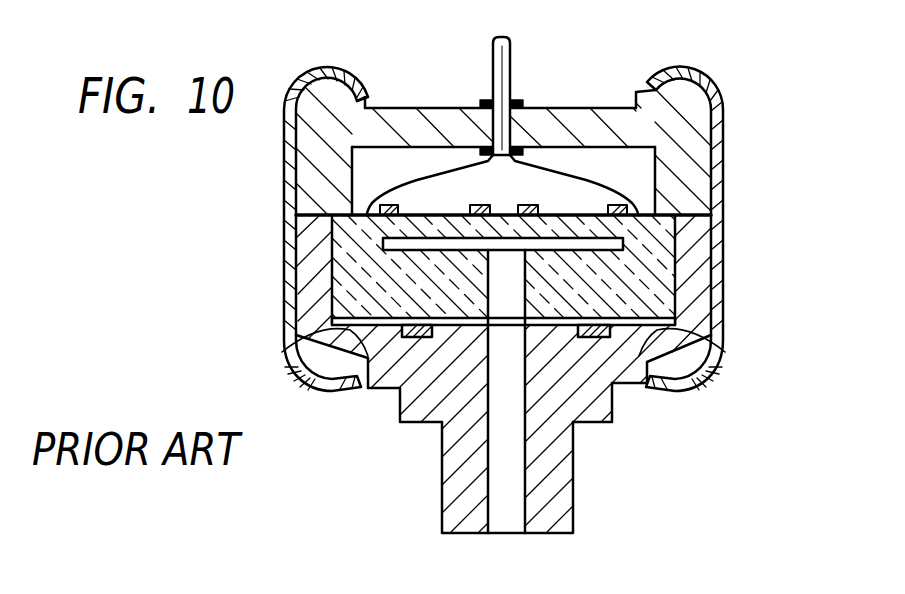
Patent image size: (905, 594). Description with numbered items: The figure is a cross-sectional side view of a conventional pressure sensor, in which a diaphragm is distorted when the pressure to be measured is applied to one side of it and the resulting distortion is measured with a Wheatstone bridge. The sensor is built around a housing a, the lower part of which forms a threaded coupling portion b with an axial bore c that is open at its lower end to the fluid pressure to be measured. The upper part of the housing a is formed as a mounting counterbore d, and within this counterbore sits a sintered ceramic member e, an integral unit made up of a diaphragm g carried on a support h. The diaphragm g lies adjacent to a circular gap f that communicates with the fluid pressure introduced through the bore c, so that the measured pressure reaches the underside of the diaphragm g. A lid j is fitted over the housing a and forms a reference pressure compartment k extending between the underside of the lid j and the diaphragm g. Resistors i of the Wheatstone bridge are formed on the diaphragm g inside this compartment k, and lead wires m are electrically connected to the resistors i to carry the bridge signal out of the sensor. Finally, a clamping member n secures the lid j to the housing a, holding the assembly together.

The housing a is at (683, 330).
The threaded coupling portion b is at (440, 477).
The axial bore c is at (520, 482).
The mounting counterbore d is at (300, 345).
The sintered ceramic member e is at (665, 272).
The circular gap f is at (660, 238).
The diaphragm g is at (429, 220).
The support h is at (353, 275).
The resistors i is at (475, 205).
The lid j is at (578, 118).
The reference pressure compartment k is at (640, 162).
The lead wires m is at (380, 172).
The clamping member n is at (722, 158).